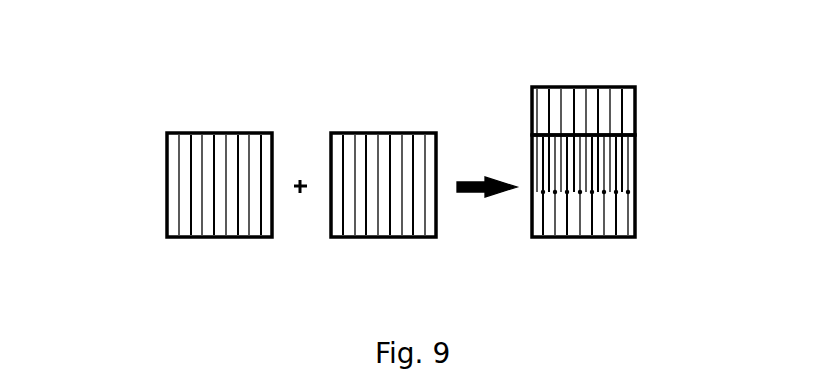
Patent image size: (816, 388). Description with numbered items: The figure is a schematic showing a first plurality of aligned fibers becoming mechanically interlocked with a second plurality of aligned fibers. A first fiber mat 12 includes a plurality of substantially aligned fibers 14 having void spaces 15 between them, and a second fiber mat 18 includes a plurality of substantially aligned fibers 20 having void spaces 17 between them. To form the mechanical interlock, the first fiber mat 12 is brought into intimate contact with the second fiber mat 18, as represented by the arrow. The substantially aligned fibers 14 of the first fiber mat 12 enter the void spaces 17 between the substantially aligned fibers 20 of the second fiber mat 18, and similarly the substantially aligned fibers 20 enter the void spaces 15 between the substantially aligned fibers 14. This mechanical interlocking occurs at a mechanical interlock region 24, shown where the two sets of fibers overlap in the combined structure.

The first fiber mat 12 is at (167, 135).
The substantially aligned fibers 14 is at (215, 197).
The void spaces 15 is at (195, 157).
The void spaces 17 is at (397, 150).
The second fiber mat 18 is at (332, 135).
The substantially aligned fibers 20 is at (390, 195).
The mechanical interlock region 24 is at (610, 160).